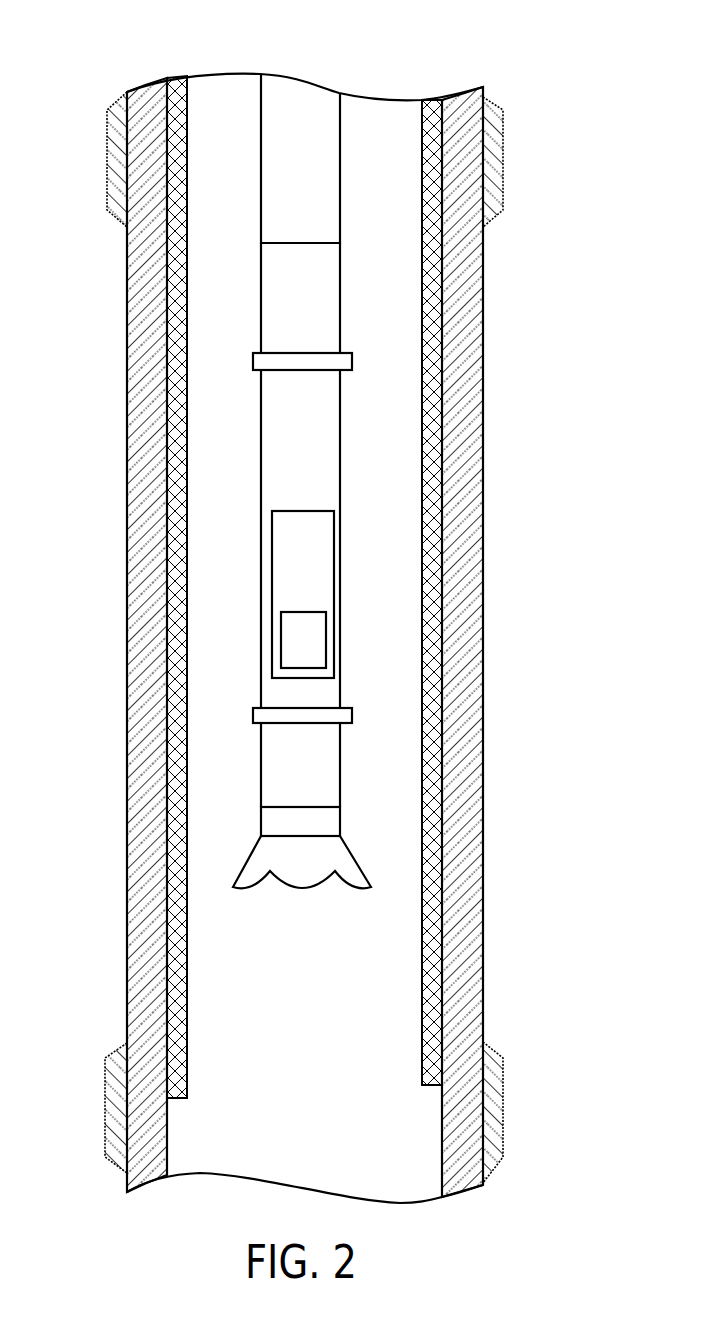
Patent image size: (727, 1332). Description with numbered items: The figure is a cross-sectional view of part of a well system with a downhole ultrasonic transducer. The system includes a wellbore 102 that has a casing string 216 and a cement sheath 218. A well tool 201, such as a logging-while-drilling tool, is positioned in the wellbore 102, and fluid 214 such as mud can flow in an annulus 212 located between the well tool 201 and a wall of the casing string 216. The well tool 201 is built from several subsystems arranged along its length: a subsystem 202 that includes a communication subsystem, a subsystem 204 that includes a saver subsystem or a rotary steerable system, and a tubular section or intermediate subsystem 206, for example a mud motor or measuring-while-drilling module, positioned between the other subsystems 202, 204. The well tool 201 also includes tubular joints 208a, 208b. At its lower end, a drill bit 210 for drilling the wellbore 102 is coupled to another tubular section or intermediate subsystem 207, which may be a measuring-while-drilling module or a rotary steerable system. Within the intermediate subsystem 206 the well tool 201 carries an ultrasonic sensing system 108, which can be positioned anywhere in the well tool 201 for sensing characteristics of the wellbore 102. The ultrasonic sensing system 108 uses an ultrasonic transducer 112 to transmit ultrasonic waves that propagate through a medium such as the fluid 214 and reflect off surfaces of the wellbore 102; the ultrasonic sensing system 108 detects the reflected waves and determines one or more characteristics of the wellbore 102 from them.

The wellbore 102 is at (367, 88).
The well tool 201 is at (268, 135).
The subsystem 202 is at (273, 300).
The tubular joint 208a is at (258, 363).
The intermediate subsystem 206 is at (272, 496).
The ultrasonic sensing system 108 is at (325, 542).
The ultrasonic transducer 112 is at (315, 640).
The tubular joint 208b is at (256, 717).
The subsystem 204 is at (272, 772).
The intermediate subsystem 207 is at (325, 820).
The drill bit 210 is at (303, 888).
The annulus 212 is at (215, 233).
The fluid 214 is at (392, 993).
The casing string 216 is at (180, 505).
The cement sheath 218 is at (140, 595).